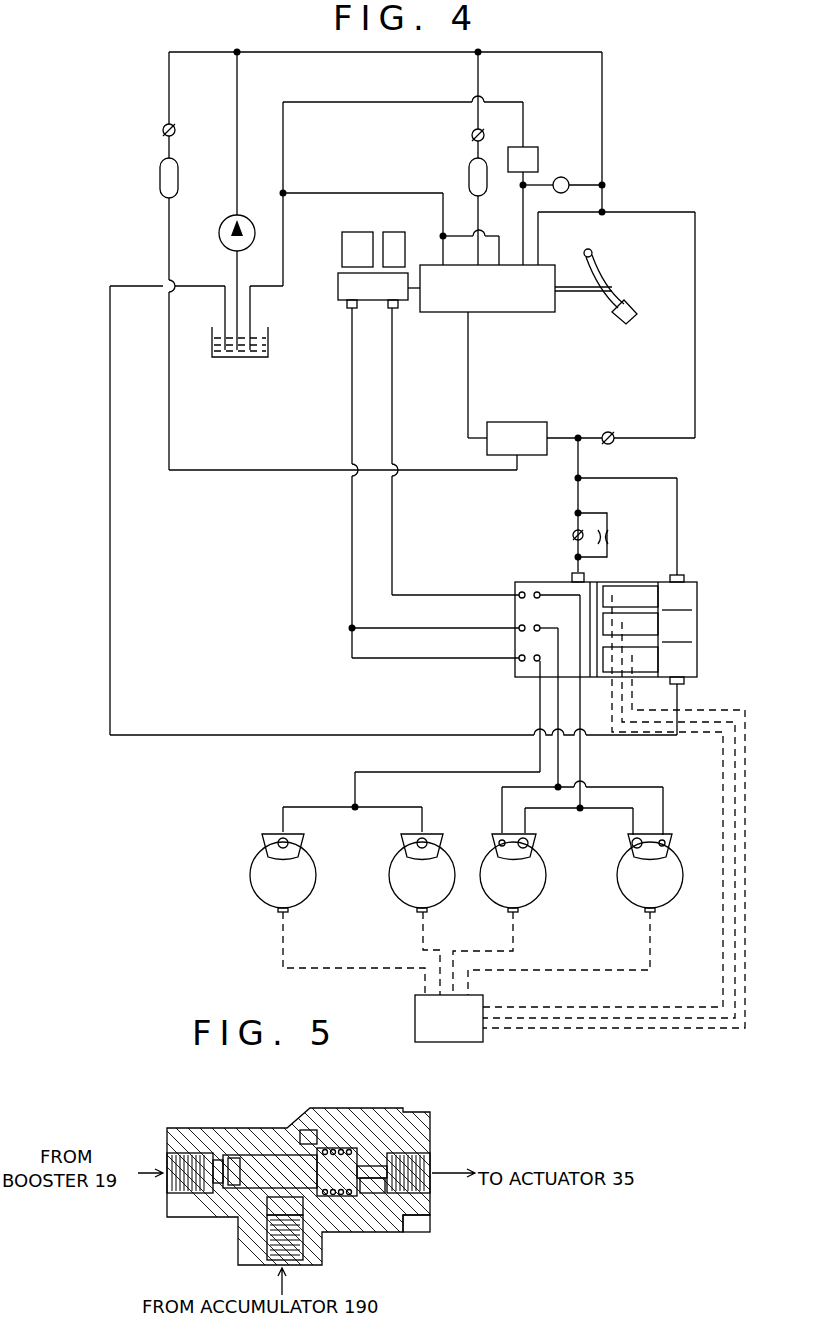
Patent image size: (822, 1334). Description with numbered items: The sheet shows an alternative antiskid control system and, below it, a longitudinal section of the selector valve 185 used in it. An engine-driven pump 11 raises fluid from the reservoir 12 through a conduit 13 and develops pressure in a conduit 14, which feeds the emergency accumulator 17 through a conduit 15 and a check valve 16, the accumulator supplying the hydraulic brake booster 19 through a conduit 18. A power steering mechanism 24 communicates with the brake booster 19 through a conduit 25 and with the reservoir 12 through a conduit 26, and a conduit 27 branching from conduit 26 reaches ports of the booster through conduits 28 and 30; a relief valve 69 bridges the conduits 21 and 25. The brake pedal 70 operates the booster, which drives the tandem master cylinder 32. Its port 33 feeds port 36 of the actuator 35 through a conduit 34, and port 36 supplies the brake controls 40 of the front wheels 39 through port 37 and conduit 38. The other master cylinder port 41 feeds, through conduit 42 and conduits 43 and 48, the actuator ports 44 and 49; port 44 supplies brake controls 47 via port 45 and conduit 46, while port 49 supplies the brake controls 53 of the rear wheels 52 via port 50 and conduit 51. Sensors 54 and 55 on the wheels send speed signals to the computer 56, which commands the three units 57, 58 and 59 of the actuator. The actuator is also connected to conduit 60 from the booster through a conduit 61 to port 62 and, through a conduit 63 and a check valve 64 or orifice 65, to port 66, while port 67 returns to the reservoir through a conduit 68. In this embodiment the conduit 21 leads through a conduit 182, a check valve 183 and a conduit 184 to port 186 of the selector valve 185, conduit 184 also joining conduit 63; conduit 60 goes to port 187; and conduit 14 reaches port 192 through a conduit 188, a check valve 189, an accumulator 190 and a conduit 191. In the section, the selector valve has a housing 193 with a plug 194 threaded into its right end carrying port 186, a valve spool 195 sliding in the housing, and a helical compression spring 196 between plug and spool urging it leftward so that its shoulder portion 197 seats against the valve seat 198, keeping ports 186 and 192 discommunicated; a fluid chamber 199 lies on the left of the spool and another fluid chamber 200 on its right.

In FIG. 4, the pump 11 is at (219, 233).
In FIG. 4, the reservoir 12 is at (222, 355).
In FIG. 4, the conduit 13 is at (236, 272).
In FIG. 4, the conduit 14 is at (238, 88).
In FIG. 4, the conduit 15 is at (478, 85).
In FIG. 4, the check valve 16 is at (472, 136).
In FIG. 4, the emergency accumulator 17 is at (468, 176).
In FIG. 4, the conduit 18 is at (480, 214).
In FIG. 4, the hydraulic brake booster 19 is at (530, 320).
In FIG. 4, the conduit 21 is at (603, 80).
In FIG. 4, the power steering mechanism 24 is at (526, 147).
In FIG. 4, the conduit 25 is at (530, 184).
In FIG. 4, the conduit 26 is at (338, 94).
In FIG. 4, the conduit 27 is at (338, 185).
In FIG. 4, the conduit 28 is at (458, 236).
In FIG. 4, the conduit 30 is at (440, 237).
In FIG. 4, the tandem master cylinder 32 is at (335, 302).
In FIG. 4, the port 33 is at (398, 312).
In FIG. 4, the conduit 34 is at (394, 388).
In FIG. 4, the actuator 35 is at (710, 584).
In FIG. 4, the port 36 is at (518, 592).
In FIG. 4, the port 37 is at (536, 592).
In FIG. 4, the conduit 38 is at (581, 762).
In FIG. 4, the front wheels 39 is at (540, 870).
In FIG. 4, the brake controls 40 is at (536, 841).
In FIG. 4, the port 41 is at (348, 312).
In FIG. 4, the conduit 42 is at (350, 390).
In FIG. 4, the conduit 43 is at (385, 628).
In FIG. 4, the port 44 is at (519, 626).
In FIG. 4, the port 45 is at (541, 626).
In FIG. 4, the conduit 46 is at (500, 792).
In FIG. 4, the brake controls 47 is at (492, 845).
In FIG. 4, the conduit 48 is at (410, 659).
In FIG. 4, the port 49 is at (520, 662).
In FIG. 4, the port 50 is at (536, 662).
In FIG. 4, the conduit 51 is at (374, 757).
In FIG. 4, the rear wheels 52 is at (313, 870).
In FIG. 4, the brake controls 53 is at (303, 842).
In FIG. 4, the sensors 54 is at (520, 910).
In FIG. 4, the sensors 55 is at (290, 908).
In FIG. 4, the computer 56 is at (415, 1012).
In FIG. 4, the actuator unit 57 is at (698, 597).
In FIG. 4, the actuator unit 58 is at (698, 630).
In FIG. 4, the actuator unit 59 is at (698, 660).
In FIG. 4, the conduit 60 is at (470, 375).
In FIG. 4, the conduit 61 is at (678, 505).
In FIG. 4, the port 62 is at (683, 575).
In FIG. 4, the conduit 63 is at (576, 466).
In FIG. 4, the check valve 64 is at (572, 534).
In FIG. 4, the orifice 65 is at (610, 537).
In FIG. 4, the port 66 is at (572, 577).
In FIG. 4, the port 67 is at (684, 686).
In FIG. 4, the conduit 68 is at (240, 734).
In FIG. 4, the relief valve 69 is at (566, 177).
In FIG. 4, the brake pedal 70 is at (618, 316).
In FIG. 4, the conduit 182 is at (696, 335).
In FIG. 4, the check valve 183 is at (610, 431).
In FIG. 4, the conduit 184 is at (576, 436).
In FIG. 4, the selector valve 185 is at (505, 422).
In FIG. 5, the selector valve 185 is at (393, 1246).
In FIG. 5, the port 186 is at (425, 1150).
In FIG. 5, the port 187 is at (190, 1150).
In FIG. 4, the conduit 188 is at (170, 84).
In FIG. 4, the check valve 189 is at (176, 130).
In FIG. 4, the accumulator 190 is at (178, 172).
In FIG. 4, the conduit 191 is at (170, 434).
In FIG. 5, the port 192 is at (278, 1248).
In FIG. 5, the housing 193 is at (315, 1128).
In FIG. 5, the plug 194 is at (418, 1215).
In FIG. 5, the valve spool 195 is at (242, 1178).
In FIG. 5, the helical compression spring 196 is at (310, 1230).
In FIG. 5, the shoulder portion 197 is at (305, 1148).
In FIG. 5, the valve seat 198 is at (292, 1165).
In FIG. 5, the fluid chamber 199 is at (232, 1152).
In FIG. 5, the fluid chamber 200 is at (348, 1197).